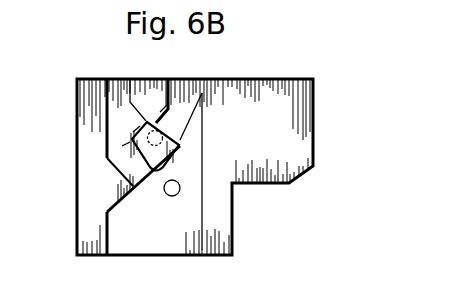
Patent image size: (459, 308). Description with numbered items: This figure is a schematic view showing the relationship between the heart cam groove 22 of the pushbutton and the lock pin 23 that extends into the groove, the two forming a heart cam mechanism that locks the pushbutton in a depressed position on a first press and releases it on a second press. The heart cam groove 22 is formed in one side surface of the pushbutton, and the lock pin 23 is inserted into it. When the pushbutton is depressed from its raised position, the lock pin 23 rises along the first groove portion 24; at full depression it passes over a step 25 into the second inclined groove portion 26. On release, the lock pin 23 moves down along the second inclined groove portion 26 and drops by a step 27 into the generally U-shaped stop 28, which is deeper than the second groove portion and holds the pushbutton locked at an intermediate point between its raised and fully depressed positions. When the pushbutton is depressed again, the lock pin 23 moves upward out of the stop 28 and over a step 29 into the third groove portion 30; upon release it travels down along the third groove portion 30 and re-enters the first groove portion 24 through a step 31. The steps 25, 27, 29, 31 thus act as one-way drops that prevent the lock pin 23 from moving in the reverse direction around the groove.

The heart cam groove 22 is at (125, 90).
The lock pin 23 is at (173, 197).
The first groove portion 24 is at (187, 167).
The step 25 is at (180, 140).
The second inclined groove portion 26 is at (172, 107).
The step 27 is at (145, 118).
The U-shaped stop 28 is at (148, 141).
The step 29 is at (133, 132).
The third groove portion 30 is at (122, 146).
The step 31 is at (133, 182).